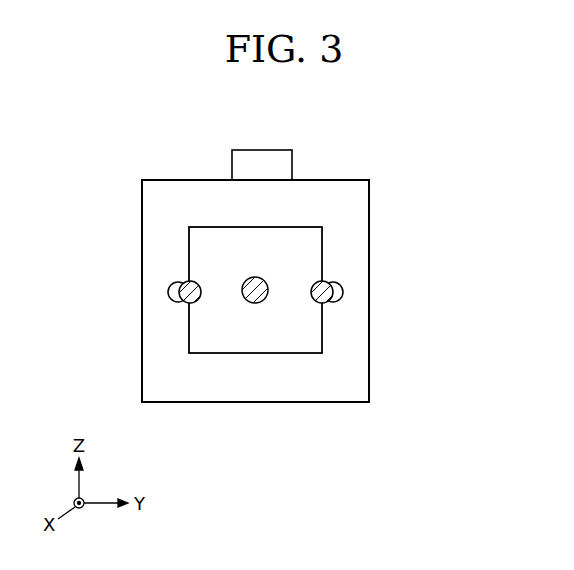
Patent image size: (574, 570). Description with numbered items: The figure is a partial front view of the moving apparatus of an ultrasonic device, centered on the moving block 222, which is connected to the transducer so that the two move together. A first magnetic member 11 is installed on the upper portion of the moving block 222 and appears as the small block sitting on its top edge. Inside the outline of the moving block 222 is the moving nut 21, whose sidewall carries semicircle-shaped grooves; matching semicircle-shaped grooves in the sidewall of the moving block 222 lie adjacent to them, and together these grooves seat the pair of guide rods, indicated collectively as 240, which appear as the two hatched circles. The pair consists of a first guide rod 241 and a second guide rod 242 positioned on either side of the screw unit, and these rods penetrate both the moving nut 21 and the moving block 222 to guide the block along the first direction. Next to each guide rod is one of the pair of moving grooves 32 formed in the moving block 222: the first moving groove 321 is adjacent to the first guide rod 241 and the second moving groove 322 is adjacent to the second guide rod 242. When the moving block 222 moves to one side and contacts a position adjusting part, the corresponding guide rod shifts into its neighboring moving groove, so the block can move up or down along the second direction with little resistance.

The first magnetic member 11 is at (293, 157).
The moving block 222 is at (355, 200).
The moving nut 21 is at (310, 246).
The pair of moving grooves 32 is at (280, 373).
The first moving groove 321 is at (168, 296).
The second moving groove 322 is at (343, 298).
The conductive members 240 is at (258, 375).
The first guide rod 241 is at (197, 303).
The second guide rod 242 is at (314, 303).